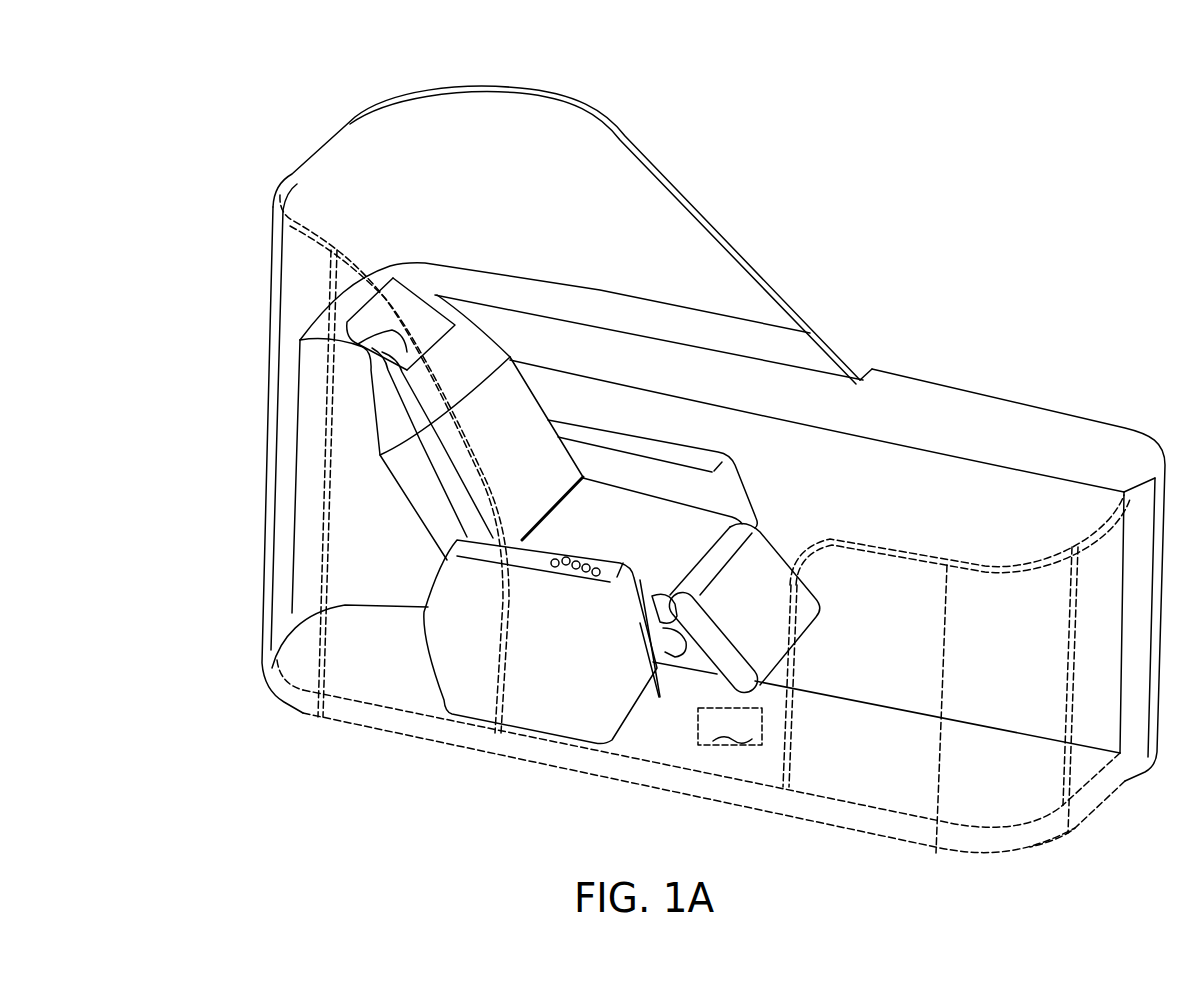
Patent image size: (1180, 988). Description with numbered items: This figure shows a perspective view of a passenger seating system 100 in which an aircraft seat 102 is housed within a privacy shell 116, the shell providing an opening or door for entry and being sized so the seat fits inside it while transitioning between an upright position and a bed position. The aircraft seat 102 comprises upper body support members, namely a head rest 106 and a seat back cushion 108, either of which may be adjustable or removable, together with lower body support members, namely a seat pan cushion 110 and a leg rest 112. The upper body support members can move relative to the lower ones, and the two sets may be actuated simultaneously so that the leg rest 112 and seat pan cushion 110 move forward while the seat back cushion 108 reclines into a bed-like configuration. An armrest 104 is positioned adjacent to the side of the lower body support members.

The passenger seating system 100 is at (700, 158).
The aircraft seat 102 is at (368, 391).
The armrest 104 is at (463, 667).
The head rest 106 is at (420, 313).
The seat back cushion 108 is at (500, 402).
The seat pan cushion 110 is at (690, 523).
The leg rest 112 is at (767, 572).
The privacy shell 116 is at (730, 726).